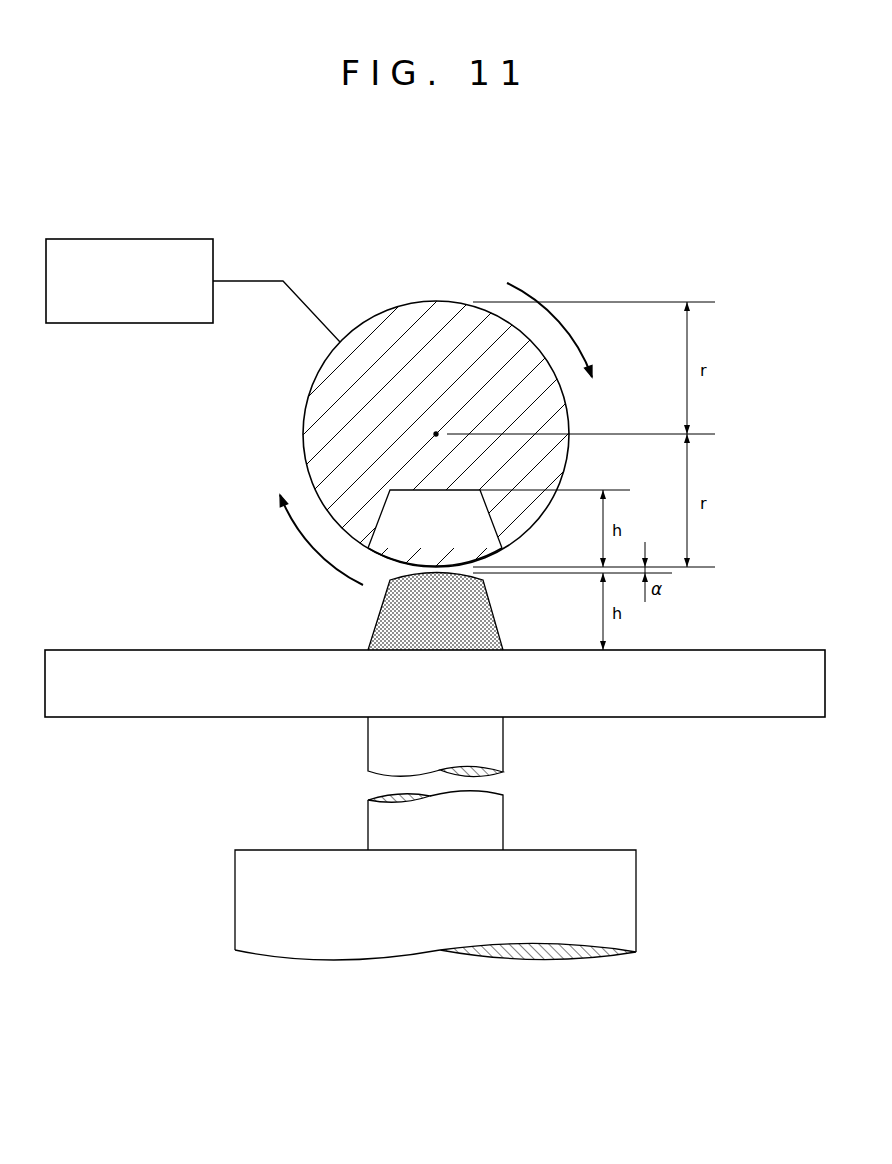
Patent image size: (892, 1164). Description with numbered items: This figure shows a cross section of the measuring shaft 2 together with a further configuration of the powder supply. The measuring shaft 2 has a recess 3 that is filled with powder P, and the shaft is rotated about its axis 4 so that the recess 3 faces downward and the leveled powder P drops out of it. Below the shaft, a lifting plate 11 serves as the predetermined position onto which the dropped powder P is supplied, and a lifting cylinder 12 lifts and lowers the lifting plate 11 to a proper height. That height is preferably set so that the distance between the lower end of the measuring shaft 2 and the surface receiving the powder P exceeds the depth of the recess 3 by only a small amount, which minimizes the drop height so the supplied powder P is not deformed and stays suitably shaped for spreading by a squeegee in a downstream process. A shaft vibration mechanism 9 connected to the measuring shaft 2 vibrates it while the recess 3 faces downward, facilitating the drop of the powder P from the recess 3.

The measuring shaft 2 is at (278, 436).
The recess 3 is at (442, 540).
The axis 4 is at (436, 434).
The shaft vibration mechanism 9 is at (128, 239).
The powder P is at (372, 627).
The lifting plate 11 is at (713, 698).
The lifting cylinder 12 is at (630, 878).